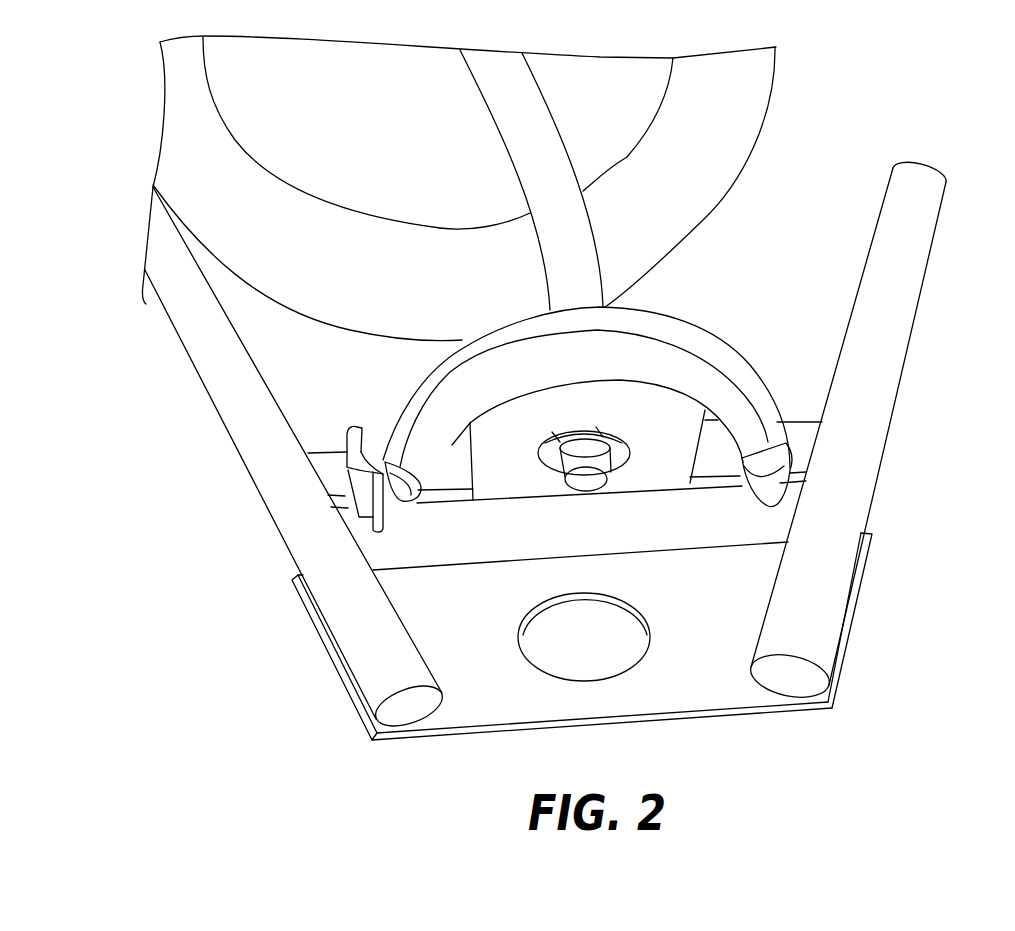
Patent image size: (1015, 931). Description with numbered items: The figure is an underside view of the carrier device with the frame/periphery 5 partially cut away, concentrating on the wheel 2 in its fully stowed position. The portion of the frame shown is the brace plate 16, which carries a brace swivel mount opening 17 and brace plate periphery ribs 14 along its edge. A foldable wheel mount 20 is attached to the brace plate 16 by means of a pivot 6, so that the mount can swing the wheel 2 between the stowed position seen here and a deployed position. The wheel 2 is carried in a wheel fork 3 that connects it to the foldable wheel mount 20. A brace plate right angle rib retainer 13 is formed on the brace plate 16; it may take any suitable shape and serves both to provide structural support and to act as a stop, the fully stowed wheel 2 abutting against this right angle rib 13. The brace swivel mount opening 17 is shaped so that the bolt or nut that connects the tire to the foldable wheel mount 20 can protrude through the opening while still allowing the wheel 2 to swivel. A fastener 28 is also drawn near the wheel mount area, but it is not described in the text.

The wheel 2 is at (738, 126).
The wheel fork 3 is at (558, 255).
The frame/periphery 5 is at (903, 288).
The pivot 6 is at (713, 484).
The brace plate right angle rib retainer 13 is at (793, 433).
The brace plate periphery rib 14 is at (843, 667).
The brace plate 16 is at (690, 693).
The brace swivel mount opening 17 is at (560, 657).
The foldable wheel mount 20 is at (722, 345).
The fastener 28 is at (582, 452).